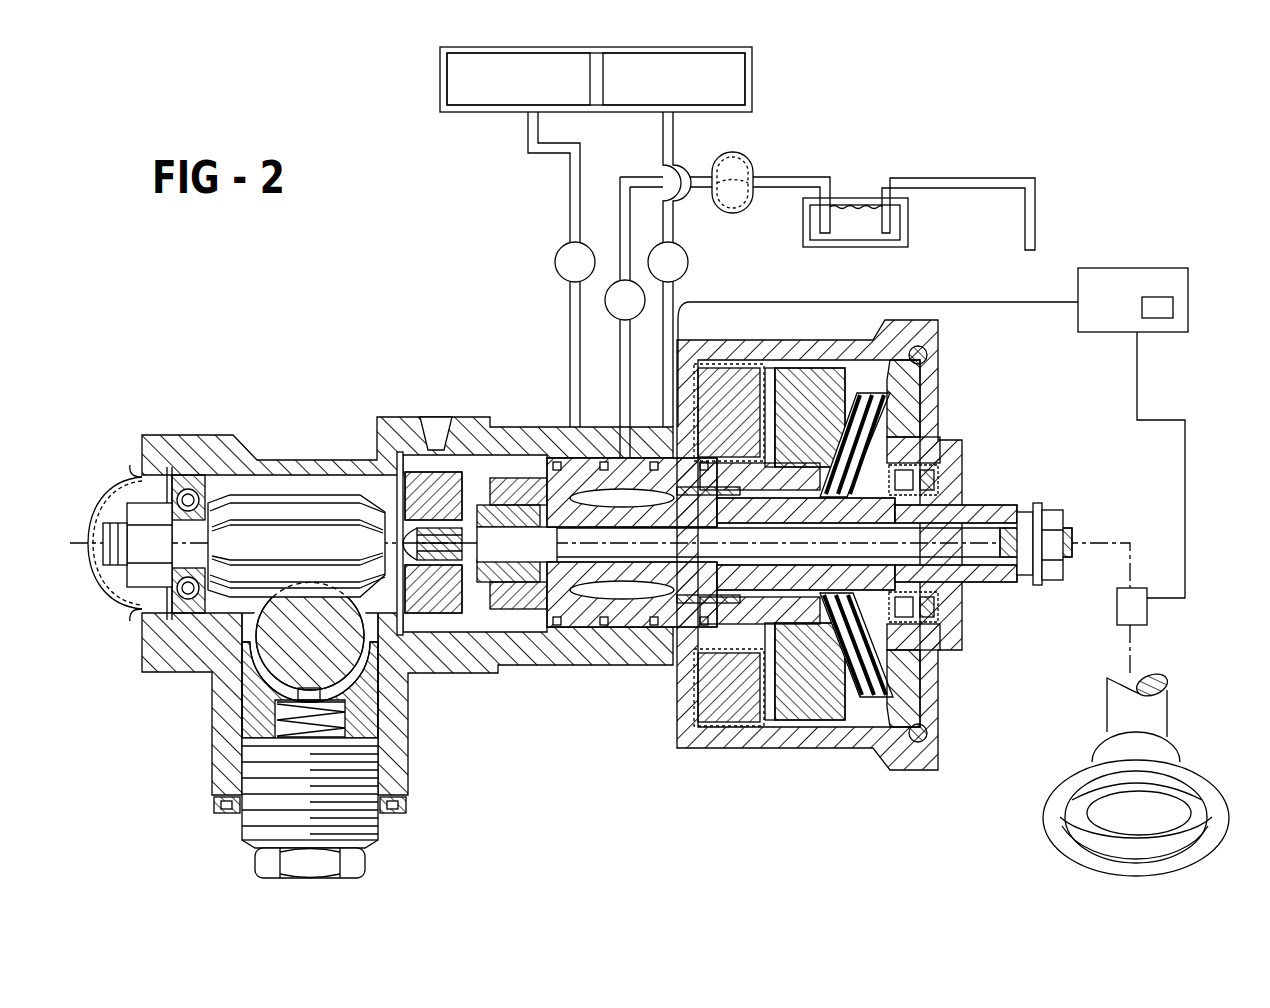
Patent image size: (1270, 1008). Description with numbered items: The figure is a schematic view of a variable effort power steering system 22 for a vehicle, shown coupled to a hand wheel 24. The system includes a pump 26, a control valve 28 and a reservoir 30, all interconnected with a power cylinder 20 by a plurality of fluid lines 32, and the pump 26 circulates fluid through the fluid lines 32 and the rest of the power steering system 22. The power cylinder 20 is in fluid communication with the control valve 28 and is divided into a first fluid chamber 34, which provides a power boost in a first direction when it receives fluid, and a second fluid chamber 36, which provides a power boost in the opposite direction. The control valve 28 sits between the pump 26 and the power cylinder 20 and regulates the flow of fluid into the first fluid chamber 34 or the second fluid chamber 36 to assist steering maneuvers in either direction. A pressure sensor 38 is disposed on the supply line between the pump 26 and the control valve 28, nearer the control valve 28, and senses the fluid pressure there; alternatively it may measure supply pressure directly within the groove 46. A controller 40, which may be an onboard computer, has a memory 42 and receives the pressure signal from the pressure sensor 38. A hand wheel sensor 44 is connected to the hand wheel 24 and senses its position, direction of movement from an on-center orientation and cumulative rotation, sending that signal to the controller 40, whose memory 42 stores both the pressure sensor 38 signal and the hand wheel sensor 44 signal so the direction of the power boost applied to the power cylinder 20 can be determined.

The power cylinder 20 is at (544, 79).
The power steering system 22 is at (666, 462).
The hand wheel 24 is at (1043, 812).
The pump 26 is at (736, 152).
The control valve 28 is at (345, 455).
The reservoir 30 is at (862, 200).
The fluid lines 32 is at (570, 321).
The first fluid chamber 34 is at (661, 92).
The second fluid chamber 36 is at (501, 92).
The pressure sensor 38 is at (611, 315).
The controller 40 is at (933, 399).
The memory 42 is at (1156, 297).
The hand wheel sensor 44 is at (1147, 612).
The groove 46 is at (620, 458).